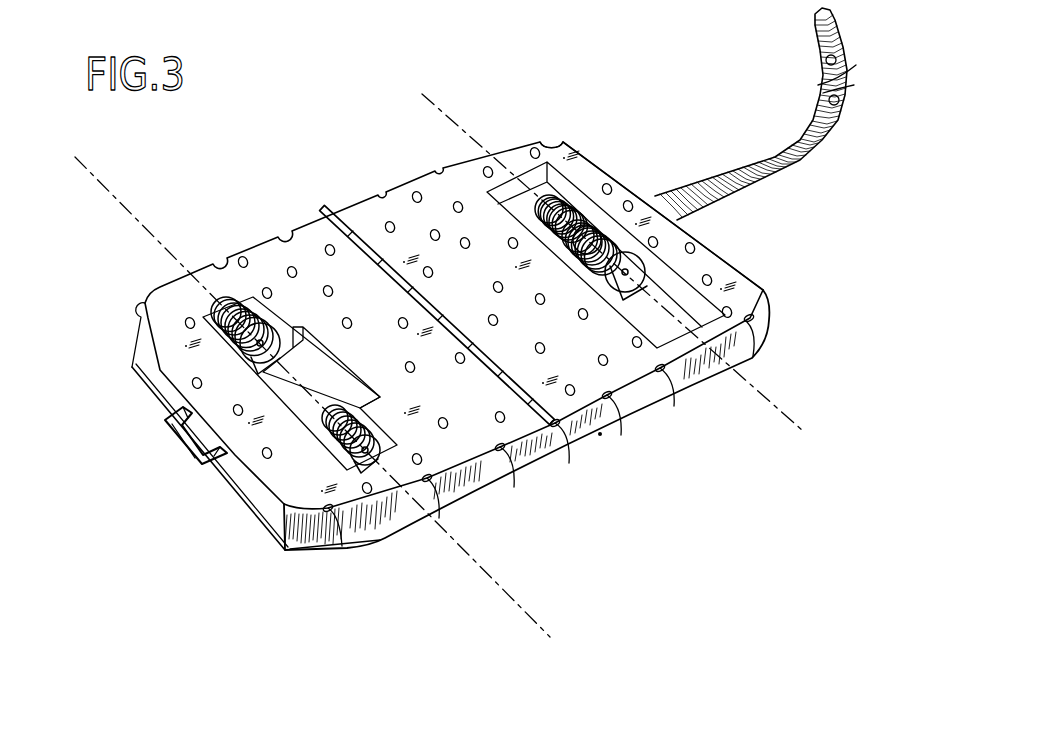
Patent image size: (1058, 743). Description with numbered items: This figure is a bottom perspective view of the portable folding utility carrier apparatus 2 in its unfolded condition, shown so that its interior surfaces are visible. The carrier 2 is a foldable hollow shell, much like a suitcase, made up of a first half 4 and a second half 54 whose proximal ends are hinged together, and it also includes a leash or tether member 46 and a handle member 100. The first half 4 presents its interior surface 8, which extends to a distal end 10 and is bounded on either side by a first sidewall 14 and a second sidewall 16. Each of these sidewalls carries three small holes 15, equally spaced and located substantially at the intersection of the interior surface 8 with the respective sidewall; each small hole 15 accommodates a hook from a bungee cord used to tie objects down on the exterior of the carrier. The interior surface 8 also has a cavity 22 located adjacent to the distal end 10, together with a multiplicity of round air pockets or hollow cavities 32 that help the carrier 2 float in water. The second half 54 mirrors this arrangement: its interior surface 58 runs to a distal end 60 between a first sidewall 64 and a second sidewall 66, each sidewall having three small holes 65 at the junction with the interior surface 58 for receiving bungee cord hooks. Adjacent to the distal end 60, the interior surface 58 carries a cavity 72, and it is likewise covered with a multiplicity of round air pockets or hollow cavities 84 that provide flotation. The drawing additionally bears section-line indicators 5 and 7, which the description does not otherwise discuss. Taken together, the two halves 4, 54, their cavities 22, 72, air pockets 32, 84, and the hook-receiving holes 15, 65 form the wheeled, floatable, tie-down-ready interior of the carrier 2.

The portable folding utility carrier apparatus 2 is at (565, 88).
The first half 4 is at (766, 358).
The section line 5- 5 is at (80, 153).
The section line 7- 7 is at (418, 96).
The interior surface 8 is at (593, 178).
The distal end 10 is at (640, 192).
The first sidewall 14 is at (602, 438).
The small holes 15 is at (545, 140).
The second sidewall 16 is at (518, 136).
The cavity 22 is at (699, 280).
The round air pockets or hollow cavities 32 is at (391, 222).
The leash or tether member 46 is at (818, 145).
The second half 54 is at (312, 560).
The interior surface 58 is at (168, 307).
The distal end 60 is at (133, 367).
The first sidewall 64 is at (398, 522).
The small holes 65 is at (143, 313).
The second sidewall 66 is at (297, 231).
The cavity 72 is at (304, 398).
The round air pockets or hollow cavities 84 is at (296, 278).
The handle member 100 is at (183, 447).